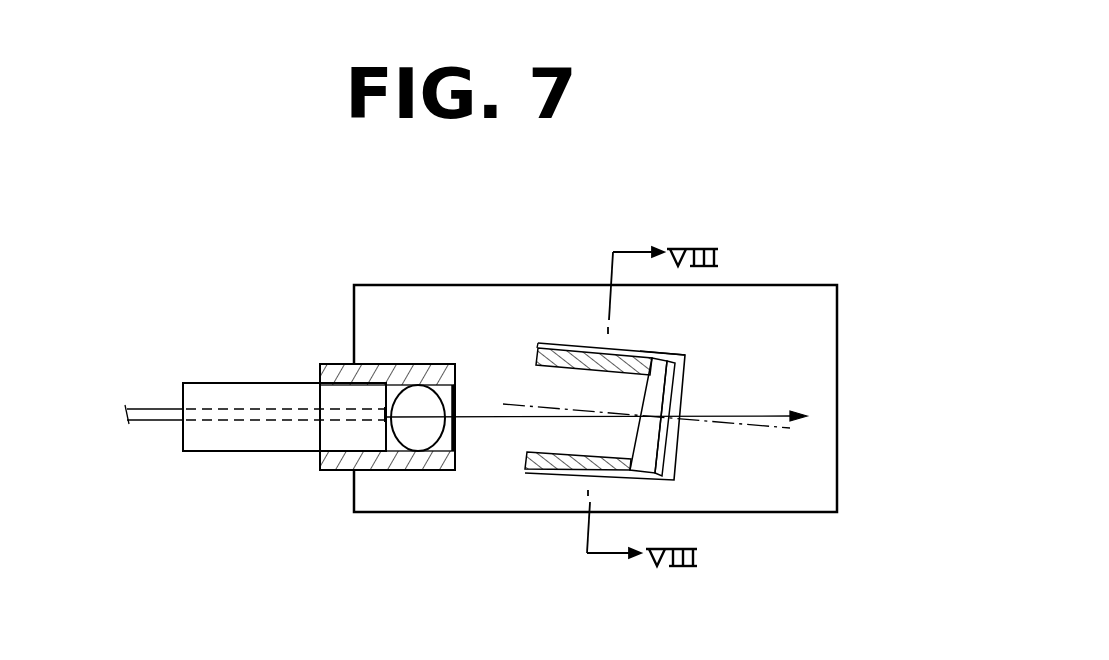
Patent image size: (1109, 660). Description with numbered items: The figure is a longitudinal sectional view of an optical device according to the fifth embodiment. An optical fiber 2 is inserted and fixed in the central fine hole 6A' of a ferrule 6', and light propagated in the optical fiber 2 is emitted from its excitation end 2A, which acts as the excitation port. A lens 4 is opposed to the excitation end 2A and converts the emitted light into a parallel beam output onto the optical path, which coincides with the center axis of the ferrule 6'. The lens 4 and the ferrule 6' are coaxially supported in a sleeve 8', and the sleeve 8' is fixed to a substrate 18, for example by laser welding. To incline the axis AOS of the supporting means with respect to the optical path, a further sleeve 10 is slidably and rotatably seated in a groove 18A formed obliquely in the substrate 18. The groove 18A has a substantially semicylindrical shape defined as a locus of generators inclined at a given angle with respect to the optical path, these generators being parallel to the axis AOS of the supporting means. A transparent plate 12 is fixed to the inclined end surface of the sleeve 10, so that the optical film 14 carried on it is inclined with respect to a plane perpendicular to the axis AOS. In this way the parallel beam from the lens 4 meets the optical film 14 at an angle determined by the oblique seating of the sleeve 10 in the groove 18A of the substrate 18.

The optical fiber 2 is at (161, 402).
The excitation end 2A is at (385, 411).
The lens 4 is at (433, 402).
The ferrule 6' is at (284, 456).
The central fine hole 6A' is at (285, 355).
The sleeve 8' is at (387, 469).
The sleeve 10 is at (558, 345).
The transparent plate 12 is at (654, 468).
The optical film 14 is at (678, 372).
The substrate 18 is at (800, 512).
The groove 18A is at (668, 356).
The axis of the supporting means AOS is at (514, 402).